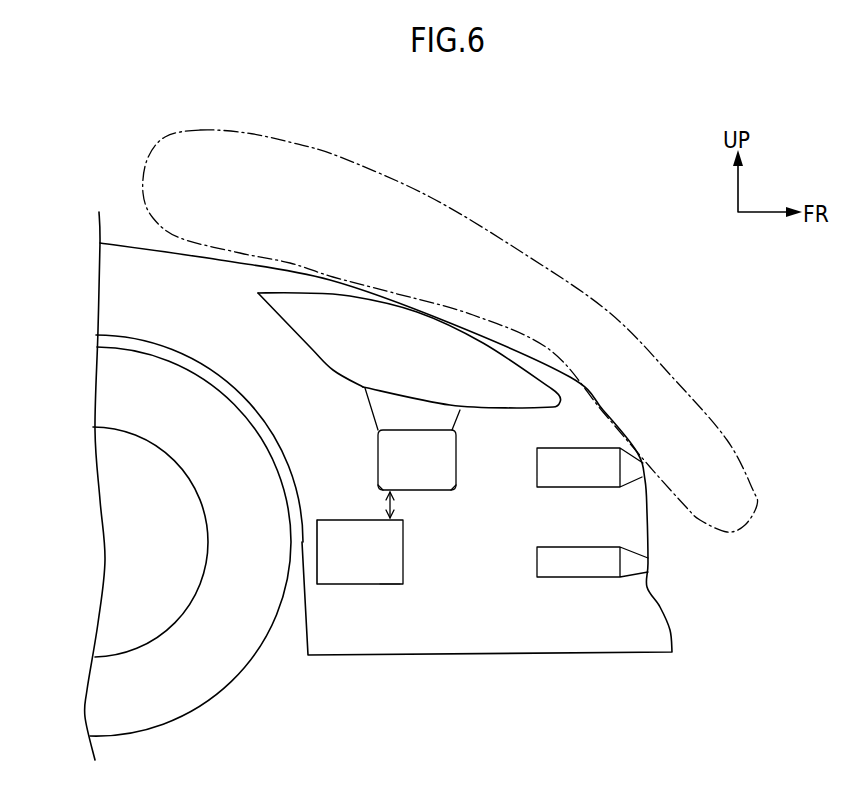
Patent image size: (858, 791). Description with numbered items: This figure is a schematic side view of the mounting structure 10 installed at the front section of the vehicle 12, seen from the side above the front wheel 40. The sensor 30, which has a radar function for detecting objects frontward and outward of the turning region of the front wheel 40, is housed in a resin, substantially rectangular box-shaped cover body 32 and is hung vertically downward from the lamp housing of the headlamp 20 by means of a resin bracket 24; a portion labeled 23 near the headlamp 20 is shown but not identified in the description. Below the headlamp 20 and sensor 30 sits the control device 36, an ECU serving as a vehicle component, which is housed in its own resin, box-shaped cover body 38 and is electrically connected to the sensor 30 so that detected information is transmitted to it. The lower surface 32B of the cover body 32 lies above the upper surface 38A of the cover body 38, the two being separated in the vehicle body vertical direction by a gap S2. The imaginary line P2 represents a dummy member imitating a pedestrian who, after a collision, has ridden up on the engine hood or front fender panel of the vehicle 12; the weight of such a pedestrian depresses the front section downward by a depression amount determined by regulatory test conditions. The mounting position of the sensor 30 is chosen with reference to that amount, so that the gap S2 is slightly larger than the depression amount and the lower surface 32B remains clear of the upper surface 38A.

The mounting structure 10 is at (507, 628).
The vehicle 12 is at (122, 239).
The headlamp 20 is at (381, 350).
The window edge portion 23 is at (300, 317).
The bracket 24 is at (388, 410).
The sensor 30 is at (460, 505).
The cover body 32 is at (442, 476).
The lower surface 32B is at (427, 494).
The control device 36 is at (390, 586).
The cover body 38 is at (348, 575).
The upper surface 38A is at (297, 505).
The front wheel 40 is at (225, 665).
The gap S2 is at (388, 505).
The imaginary line P2 is at (525, 253).